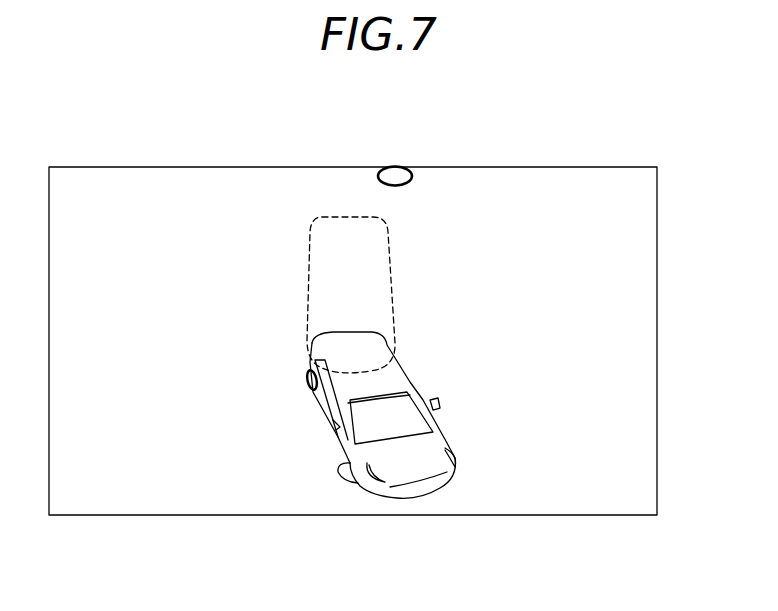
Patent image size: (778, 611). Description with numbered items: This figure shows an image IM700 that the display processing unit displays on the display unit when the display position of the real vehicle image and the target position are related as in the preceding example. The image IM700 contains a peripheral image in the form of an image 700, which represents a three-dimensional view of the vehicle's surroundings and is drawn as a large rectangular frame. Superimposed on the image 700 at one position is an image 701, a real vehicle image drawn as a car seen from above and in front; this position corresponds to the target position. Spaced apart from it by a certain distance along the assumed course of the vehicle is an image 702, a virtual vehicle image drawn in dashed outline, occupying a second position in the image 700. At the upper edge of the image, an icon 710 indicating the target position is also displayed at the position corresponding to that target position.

The image representing a three-dimensional image 700 is at (638, 251).
The image IM700 is at (637, 167).
The image representing a real vehicle image 701 is at (456, 470).
The image representing a virtual vehicle image 702 is at (313, 231).
The icon 710 is at (416, 179).